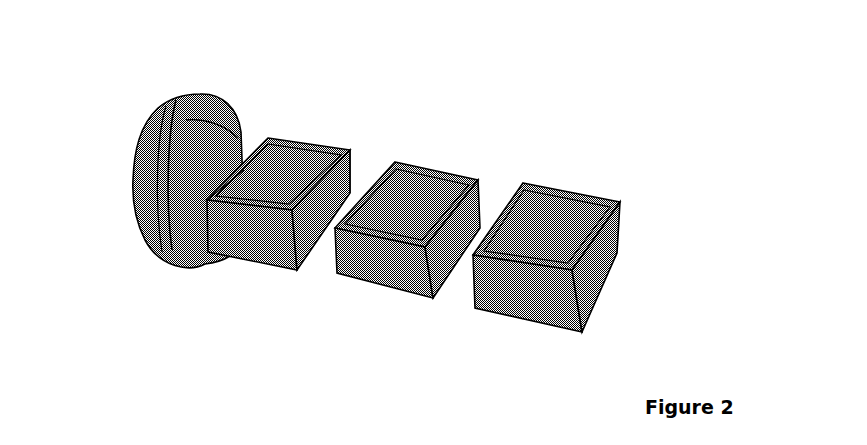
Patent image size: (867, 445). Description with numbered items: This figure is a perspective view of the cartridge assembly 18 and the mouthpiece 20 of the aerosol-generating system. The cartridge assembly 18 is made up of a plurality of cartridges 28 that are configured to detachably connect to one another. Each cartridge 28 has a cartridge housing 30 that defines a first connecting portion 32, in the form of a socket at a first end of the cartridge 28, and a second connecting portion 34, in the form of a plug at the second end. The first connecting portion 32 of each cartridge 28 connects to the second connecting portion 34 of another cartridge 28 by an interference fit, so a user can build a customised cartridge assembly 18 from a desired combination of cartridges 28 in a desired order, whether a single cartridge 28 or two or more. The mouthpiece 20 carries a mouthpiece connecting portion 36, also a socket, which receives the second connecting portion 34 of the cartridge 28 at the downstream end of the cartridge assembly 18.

The cartridge assembly 18 is at (527, 141).
The mouthpiece 20 is at (164, 140).
The cartridge 28 is at (243, 242).
The cartridge housing 30 is at (380, 260).
The first connecting portion 32 is at (330, 195).
The second connecting portion 34 is at (478, 268).
The mouthpiece connecting portion 36 is at (203, 203).